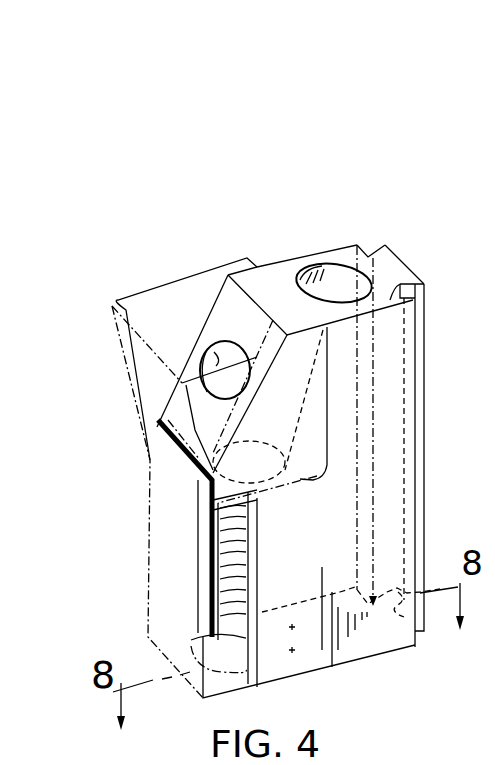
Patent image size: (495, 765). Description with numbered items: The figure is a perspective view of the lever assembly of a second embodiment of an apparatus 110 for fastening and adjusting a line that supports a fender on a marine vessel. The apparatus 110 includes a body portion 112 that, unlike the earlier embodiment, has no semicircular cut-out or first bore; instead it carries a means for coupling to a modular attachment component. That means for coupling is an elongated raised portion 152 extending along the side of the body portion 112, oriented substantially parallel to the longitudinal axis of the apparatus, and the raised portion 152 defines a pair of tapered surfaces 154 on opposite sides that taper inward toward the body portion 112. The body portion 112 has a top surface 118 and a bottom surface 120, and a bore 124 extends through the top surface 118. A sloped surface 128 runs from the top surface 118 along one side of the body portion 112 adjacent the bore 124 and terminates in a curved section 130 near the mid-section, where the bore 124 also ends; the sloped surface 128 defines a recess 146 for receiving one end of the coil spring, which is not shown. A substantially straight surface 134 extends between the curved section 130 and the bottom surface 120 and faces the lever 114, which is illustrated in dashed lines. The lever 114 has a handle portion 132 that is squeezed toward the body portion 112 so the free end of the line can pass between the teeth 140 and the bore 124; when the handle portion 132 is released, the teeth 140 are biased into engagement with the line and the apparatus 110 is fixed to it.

The apparatus 110 is at (322, 231).
The body portion 112 is at (276, 251).
The lever 114 is at (131, 294).
The top surface 118 is at (427, 286).
The bottom surface 120 is at (350, 667).
The bore 124 is at (333, 283).
The sloped surface 128 is at (175, 400).
The curved section 130 is at (190, 482).
The handle portion 132 is at (122, 352).
The straight surface 134 is at (254, 593).
The teeth 140 is at (252, 558).
The recess 146 is at (207, 340).
The raised portion 152 is at (413, 274).
The tapered surfaces 154 is at (376, 249).